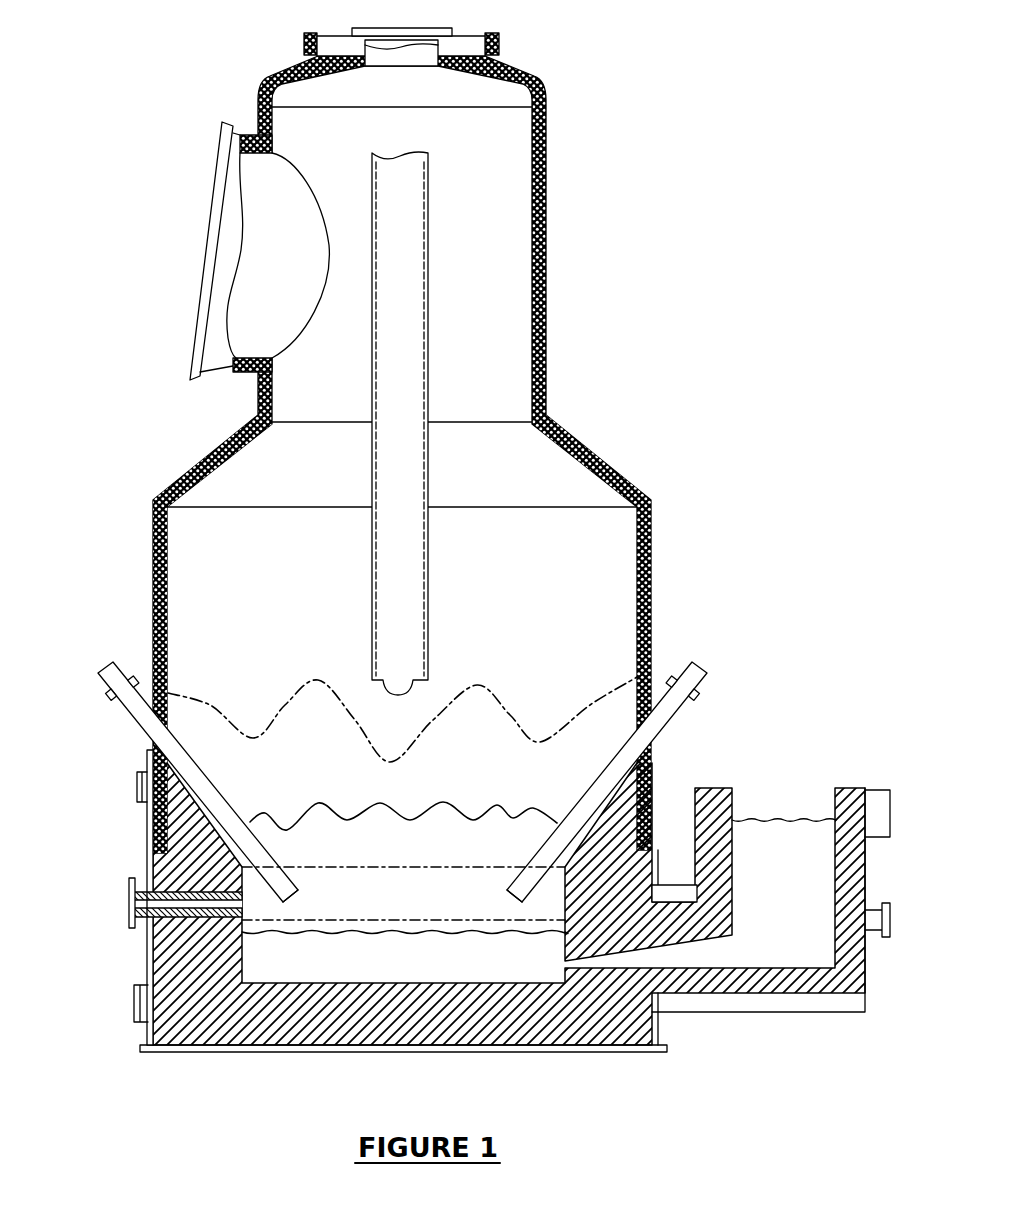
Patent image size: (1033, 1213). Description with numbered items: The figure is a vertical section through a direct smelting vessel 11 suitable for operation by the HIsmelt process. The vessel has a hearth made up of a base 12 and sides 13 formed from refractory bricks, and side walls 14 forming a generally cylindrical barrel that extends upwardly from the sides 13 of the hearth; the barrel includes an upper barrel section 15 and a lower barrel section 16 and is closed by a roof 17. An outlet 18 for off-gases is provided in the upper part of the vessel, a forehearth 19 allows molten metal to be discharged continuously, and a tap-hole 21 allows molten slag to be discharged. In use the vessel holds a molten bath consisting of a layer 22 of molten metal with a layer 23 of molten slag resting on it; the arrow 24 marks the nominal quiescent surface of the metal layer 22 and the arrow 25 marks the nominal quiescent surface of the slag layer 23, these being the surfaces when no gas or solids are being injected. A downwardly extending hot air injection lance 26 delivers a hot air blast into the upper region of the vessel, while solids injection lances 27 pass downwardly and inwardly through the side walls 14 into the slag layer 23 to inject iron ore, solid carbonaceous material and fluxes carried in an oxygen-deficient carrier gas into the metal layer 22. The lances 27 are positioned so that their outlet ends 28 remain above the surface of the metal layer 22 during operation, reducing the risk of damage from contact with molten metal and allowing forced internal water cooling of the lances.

The metallurgical vessel 11 is at (152, 503).
The base 12 is at (257, 1023).
The sides 13 is at (183, 972).
The side walls 14 is at (147, 818).
The upper barrel section 15 is at (152, 530).
The lower barrel section 16 is at (152, 868).
The roof 17 is at (213, 453).
The outlet 18 is at (207, 330).
The forehearth 19 is at (760, 886).
The tap-hole 21 is at (130, 908).
The layer of molten metal 22 is at (400, 975).
The layer of molten slag 23 is at (345, 903).
The nominal quiescent surface of the metal layer 24 is at (410, 923).
The nominal quiescent surface of the slag layer 25 is at (452, 865).
The hot air injection lance 26 is at (414, 528).
The solids injection lances 27 is at (111, 663).
The outlet ends 28 is at (290, 893).